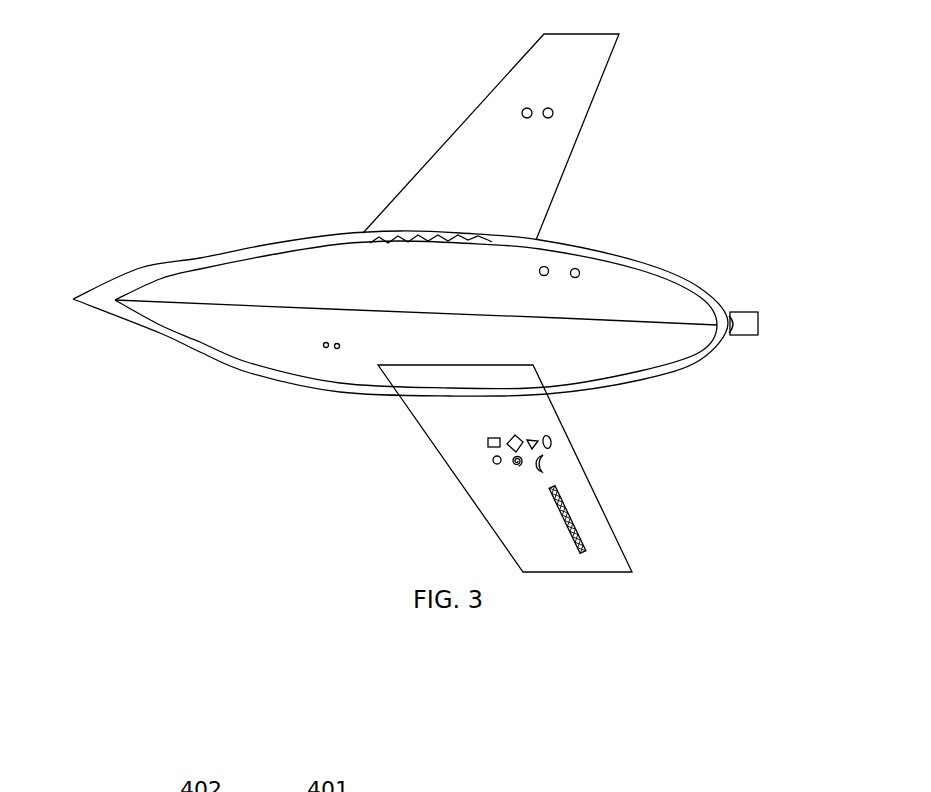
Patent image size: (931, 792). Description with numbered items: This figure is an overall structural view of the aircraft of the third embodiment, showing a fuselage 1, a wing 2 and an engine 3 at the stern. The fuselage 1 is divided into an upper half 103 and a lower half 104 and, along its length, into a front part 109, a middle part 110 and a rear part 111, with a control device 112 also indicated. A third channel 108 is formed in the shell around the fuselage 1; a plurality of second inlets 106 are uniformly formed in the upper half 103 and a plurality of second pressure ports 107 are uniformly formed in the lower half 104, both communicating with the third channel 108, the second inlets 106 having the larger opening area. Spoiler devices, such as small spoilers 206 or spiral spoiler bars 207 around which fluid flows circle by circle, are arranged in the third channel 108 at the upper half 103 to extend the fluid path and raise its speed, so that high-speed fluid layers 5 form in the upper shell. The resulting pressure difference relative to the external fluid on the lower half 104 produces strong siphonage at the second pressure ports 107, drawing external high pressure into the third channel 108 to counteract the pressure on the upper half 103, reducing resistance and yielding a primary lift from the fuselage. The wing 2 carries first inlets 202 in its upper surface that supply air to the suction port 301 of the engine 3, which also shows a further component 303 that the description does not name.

The fuselage 1 is at (140, 265).
The wing 2 is at (462, 108).
The engine 3 is at (779, 326).
The high-speed fluid layer 5 is at (465, 222).
The upper half 103 is at (320, 273).
The lower half 104 is at (293, 330).
The second inlet 106 is at (578, 269).
The second pressure port 107 is at (337, 349).
The third channel 108 is at (670, 277).
The front part 109 is at (277, 298).
The middle part 110 is at (452, 307).
The rear part 111 is at (658, 313).
The control device 112 is at (546, 267).
The first inlet 202 is at (522, 110).
The spoiler 206 is at (553, 445).
The spiral spoiler bar 207 is at (425, 232).
The suction port 301 is at (730, 336).
The propeller housing 303 is at (758, 323).